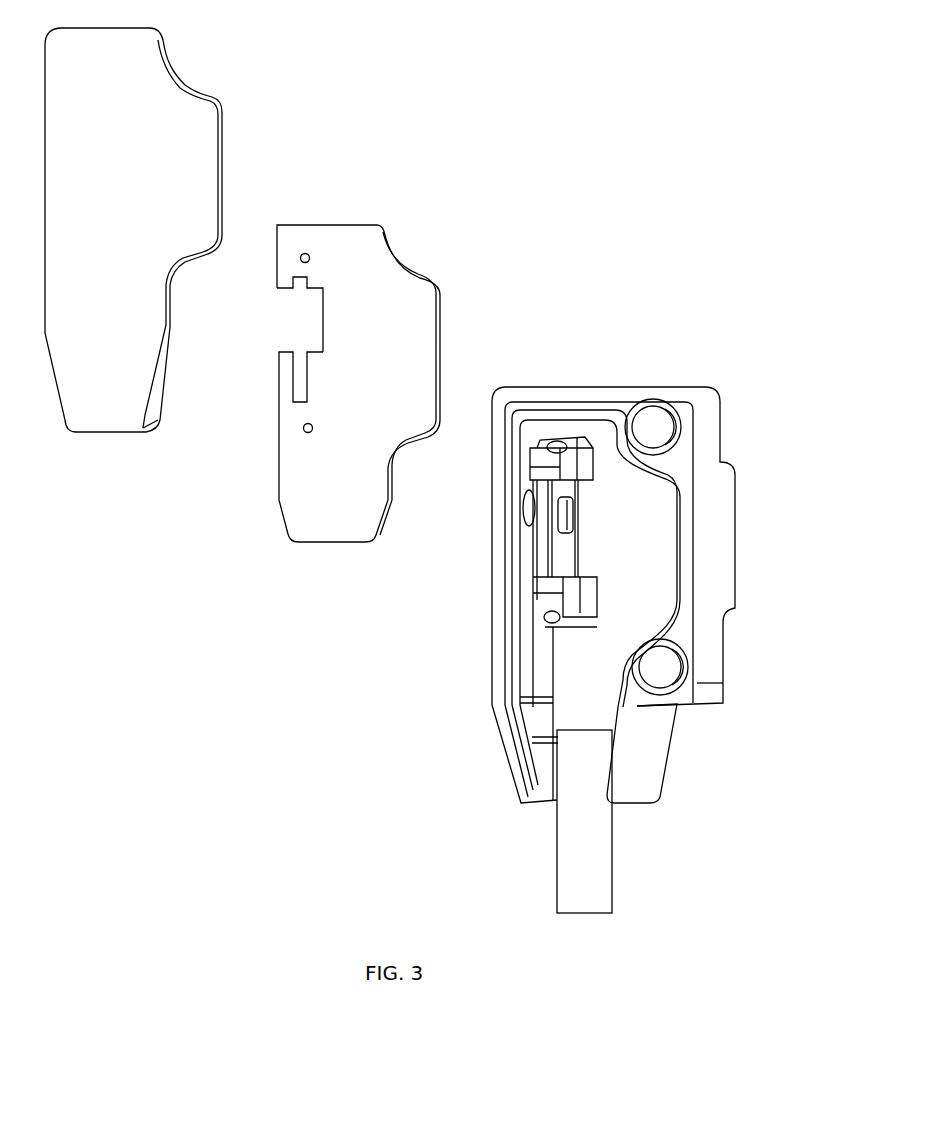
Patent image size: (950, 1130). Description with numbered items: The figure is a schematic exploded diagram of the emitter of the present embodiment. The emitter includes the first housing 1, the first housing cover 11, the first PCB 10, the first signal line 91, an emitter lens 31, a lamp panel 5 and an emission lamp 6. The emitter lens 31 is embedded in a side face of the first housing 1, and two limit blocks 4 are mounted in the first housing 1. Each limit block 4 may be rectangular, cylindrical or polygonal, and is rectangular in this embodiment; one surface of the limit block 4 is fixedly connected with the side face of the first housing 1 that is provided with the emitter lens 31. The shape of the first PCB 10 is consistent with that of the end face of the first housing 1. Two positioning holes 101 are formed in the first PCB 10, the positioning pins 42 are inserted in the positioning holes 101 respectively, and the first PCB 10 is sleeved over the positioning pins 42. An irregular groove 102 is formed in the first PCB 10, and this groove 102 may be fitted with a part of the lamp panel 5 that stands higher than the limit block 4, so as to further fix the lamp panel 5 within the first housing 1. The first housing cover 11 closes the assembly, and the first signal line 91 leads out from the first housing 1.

The first housing 1 is at (617, 614).
The limit block 4 is at (553, 606).
The lamp panel 5 is at (540, 580).
The emission lamp 6 is at (563, 515).
The first PCB 10 is at (321, 355).
The first housing cover 11 is at (138, 135).
The emitter lens 31 is at (532, 513).
The positioning pin 42 is at (555, 447).
The first signal line 91 is at (590, 862).
The positioning hole 101 is at (308, 253).
The groove 102 is at (283, 322).